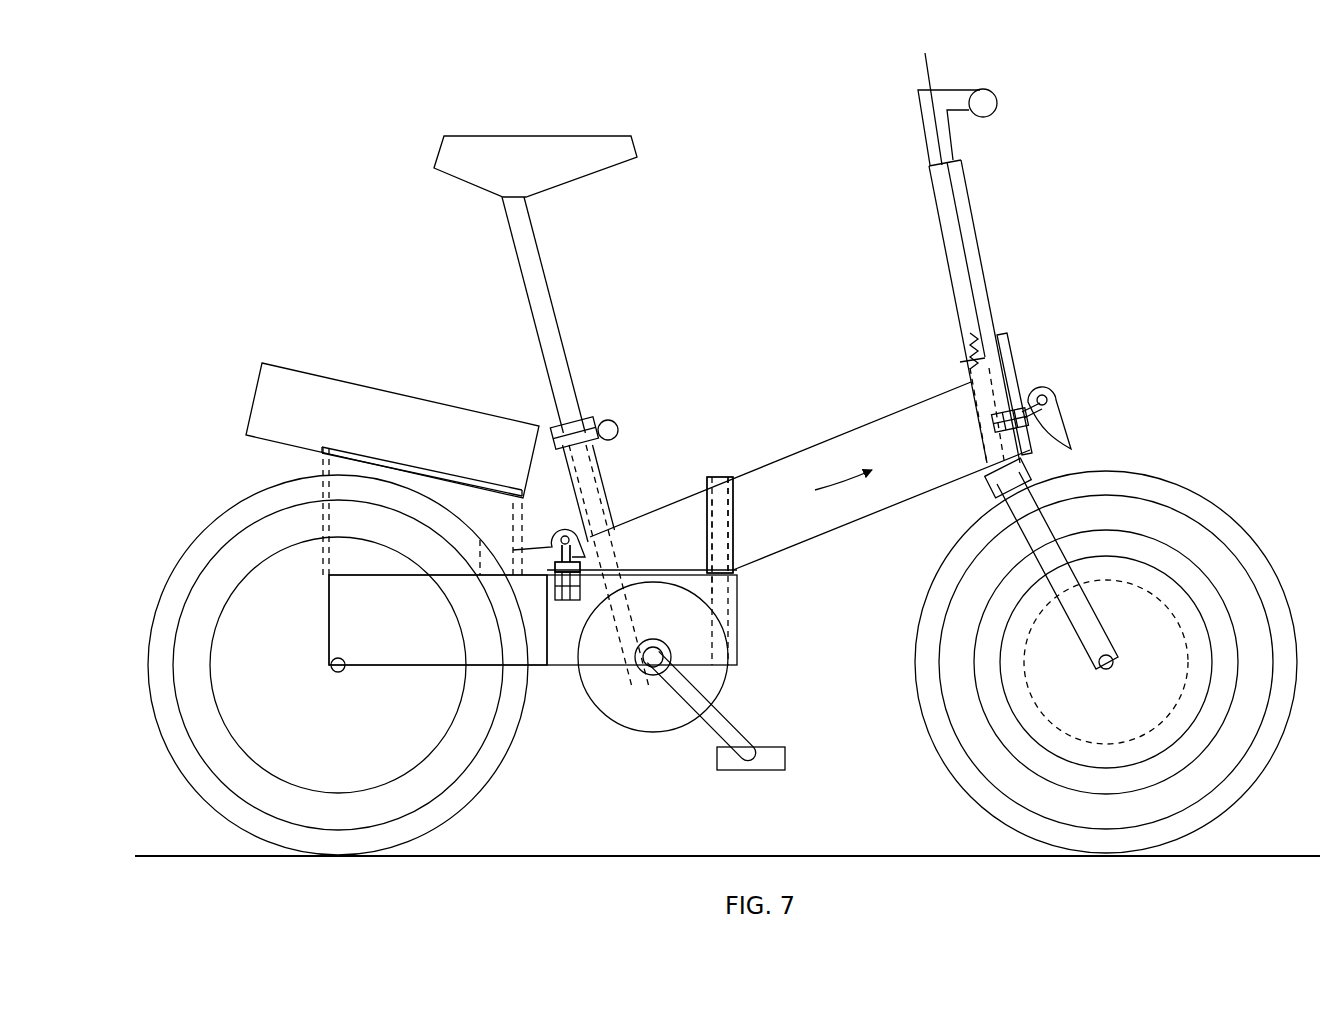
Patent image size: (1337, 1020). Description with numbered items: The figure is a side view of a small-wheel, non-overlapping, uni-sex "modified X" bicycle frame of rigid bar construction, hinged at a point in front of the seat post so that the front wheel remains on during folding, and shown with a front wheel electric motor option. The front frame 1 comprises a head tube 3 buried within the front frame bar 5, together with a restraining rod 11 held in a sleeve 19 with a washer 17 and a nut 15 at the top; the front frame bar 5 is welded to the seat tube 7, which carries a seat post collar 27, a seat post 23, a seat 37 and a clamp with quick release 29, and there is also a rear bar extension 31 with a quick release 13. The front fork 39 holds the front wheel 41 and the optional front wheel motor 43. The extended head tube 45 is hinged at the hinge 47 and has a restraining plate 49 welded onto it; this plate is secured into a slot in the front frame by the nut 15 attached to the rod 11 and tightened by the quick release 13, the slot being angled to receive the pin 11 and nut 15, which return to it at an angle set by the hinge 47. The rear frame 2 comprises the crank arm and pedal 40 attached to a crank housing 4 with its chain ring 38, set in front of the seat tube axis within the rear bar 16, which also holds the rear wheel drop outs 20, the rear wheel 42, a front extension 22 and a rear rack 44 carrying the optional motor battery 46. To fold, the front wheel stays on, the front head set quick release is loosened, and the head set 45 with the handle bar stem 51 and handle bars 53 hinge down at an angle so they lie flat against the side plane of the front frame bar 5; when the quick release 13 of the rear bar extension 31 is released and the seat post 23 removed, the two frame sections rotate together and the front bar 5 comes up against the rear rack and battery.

The front frame 1 is at (787, 438).
The rear frame 2 is at (439, 697).
The head tube 3 is at (975, 393).
The crank housing 4 is at (683, 661).
The front frame bar 5 is at (832, 487).
The seat tube 7 is at (592, 476).
The restraining rod 11 is at (557, 545).
The quick release 13 is at (565, 527).
The nut 15 is at (714, 478).
The rear bar 16 is at (497, 631).
The washer 17 is at (722, 490).
The sleeve 19 is at (737, 553).
The rear wheel drop outs 20 is at (347, 670).
The front extension 22 is at (700, 592).
The seat post 23 is at (558, 308).
The seat post collar 27 is at (569, 428).
The clamp with quick release 29 is at (606, 418).
The rear bar extension 31 is at (553, 566).
The seat 37 is at (577, 153).
The chain ring 38 is at (627, 716).
The front fork 39 is at (1062, 591).
The crank arm and pedal 40 is at (772, 762).
The front wheel 41 is at (1158, 512).
The rear wheel 42 is at (240, 772).
The front wheel motor 43 is at (1168, 625).
The rear rack 44 is at (318, 451).
The extended head tube 45 is at (977, 284).
The motor battery 46 is at (276, 405).
The hinge 47 is at (963, 334).
The restraining plate 49 is at (1022, 350).
The handle bar stem 51 is at (931, 146).
The handle bars 53 is at (999, 100).